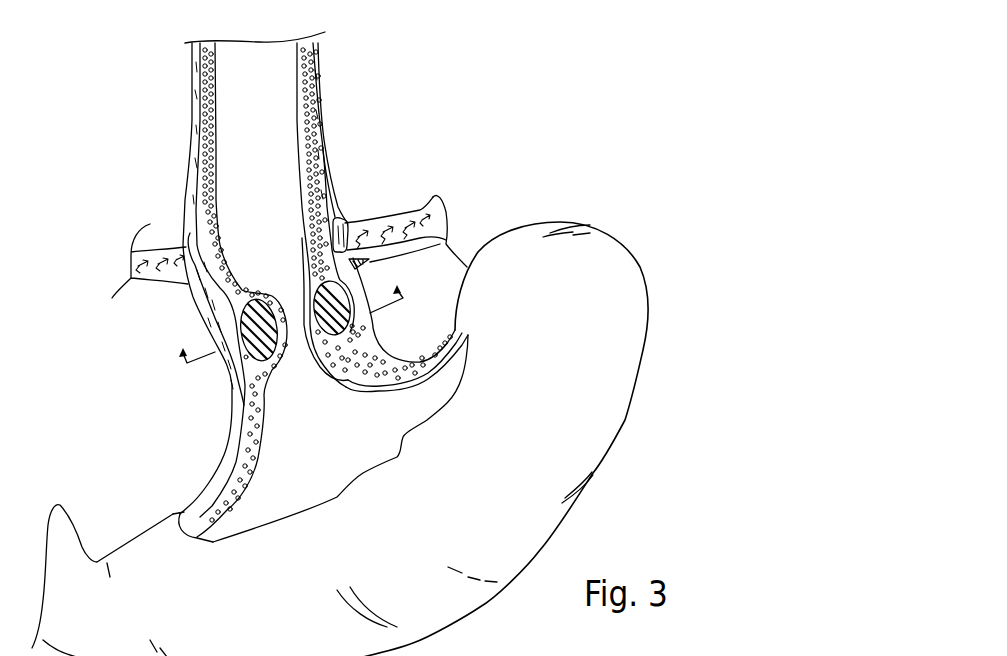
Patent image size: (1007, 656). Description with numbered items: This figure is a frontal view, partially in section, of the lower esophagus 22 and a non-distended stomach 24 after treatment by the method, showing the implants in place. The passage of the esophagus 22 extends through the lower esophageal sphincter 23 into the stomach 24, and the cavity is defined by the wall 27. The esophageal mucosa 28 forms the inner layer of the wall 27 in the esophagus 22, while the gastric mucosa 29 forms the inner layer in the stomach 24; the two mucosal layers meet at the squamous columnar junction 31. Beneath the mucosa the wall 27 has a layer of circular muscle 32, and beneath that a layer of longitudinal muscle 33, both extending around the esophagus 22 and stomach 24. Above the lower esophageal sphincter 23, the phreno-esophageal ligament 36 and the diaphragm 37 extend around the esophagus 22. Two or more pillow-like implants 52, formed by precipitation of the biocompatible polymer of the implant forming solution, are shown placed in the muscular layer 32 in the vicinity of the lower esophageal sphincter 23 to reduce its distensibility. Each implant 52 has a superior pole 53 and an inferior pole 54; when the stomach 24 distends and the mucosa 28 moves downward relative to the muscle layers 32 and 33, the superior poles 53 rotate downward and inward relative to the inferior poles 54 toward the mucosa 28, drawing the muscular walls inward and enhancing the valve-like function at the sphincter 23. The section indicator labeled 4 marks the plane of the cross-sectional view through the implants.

The section line for FIG. 4 is at (286, 312).
The esophagus 22 is at (331, 101).
The lower esophageal sphincter 23 is at (191, 326).
The stomach 24 is at (618, 277).
The wall 27 is at (207, 107).
The esophageal mucosa 28 is at (297, 50).
The gastric mucosa 29 is at (378, 394).
The squamous columnar junction 31 is at (243, 292).
The layer of circular muscle 32 is at (207, 172).
The layer of longitudinal muscle 33 is at (322, 160).
The phreno-esophageal ligament 36 is at (346, 221).
The diaphragm 37 is at (420, 210).
The implant 52 is at (246, 360).
The superior pole 53 is at (313, 285).
The inferior pole 54 is at (273, 358).